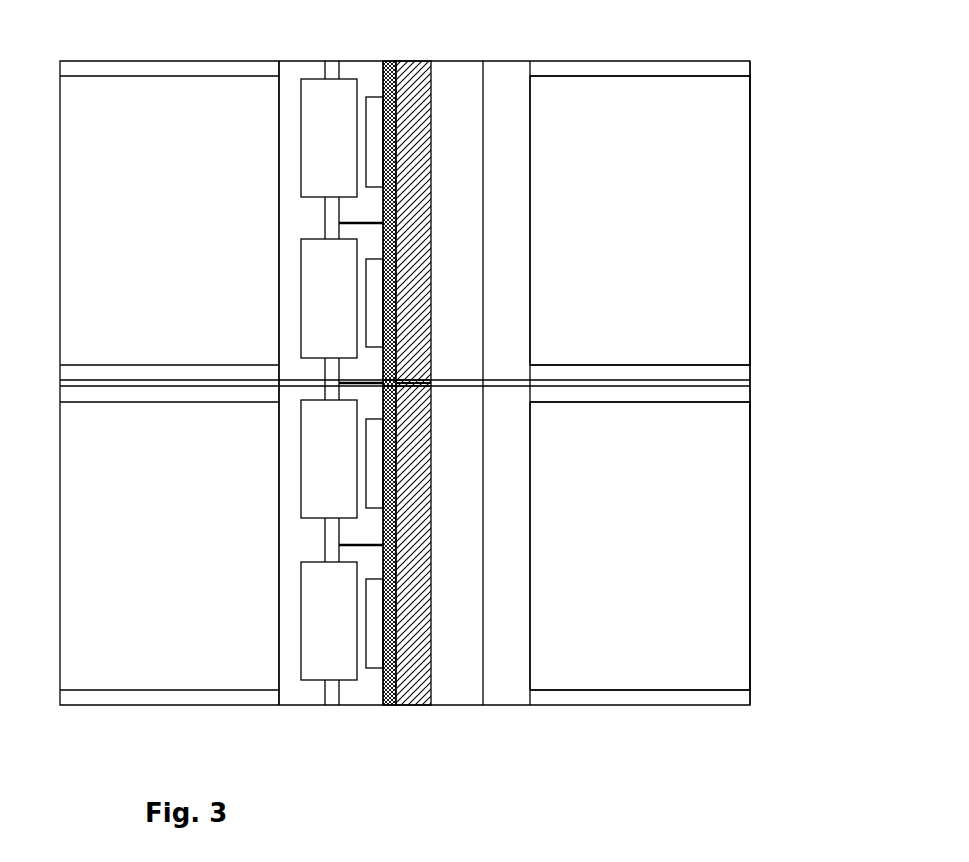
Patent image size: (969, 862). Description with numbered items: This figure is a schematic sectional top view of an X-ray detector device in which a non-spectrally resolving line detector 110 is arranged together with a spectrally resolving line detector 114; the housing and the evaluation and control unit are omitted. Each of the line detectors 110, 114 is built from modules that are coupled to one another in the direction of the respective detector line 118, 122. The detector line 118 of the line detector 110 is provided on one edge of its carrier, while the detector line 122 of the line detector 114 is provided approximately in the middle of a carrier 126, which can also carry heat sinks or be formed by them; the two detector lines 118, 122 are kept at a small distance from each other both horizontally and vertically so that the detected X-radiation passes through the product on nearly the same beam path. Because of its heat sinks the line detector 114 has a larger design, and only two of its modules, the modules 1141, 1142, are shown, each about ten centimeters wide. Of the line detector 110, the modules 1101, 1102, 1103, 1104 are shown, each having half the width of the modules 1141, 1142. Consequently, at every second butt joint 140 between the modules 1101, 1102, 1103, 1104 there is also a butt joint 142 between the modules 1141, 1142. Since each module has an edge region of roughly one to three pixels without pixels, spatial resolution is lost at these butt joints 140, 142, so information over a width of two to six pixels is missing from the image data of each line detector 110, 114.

The non-spectrally resolving line detector 110 is at (302, 56).
The module of the non-spectrally resolving line detector 1101 is at (302, 158).
The module of the non-spectrally resolving line detector 1102 is at (314, 266).
The module of the non-spectrally resolving line detector 1103 is at (308, 431).
The module of the non-spectrally resolving line detector 1104 is at (310, 578).
The spectrally resolving line detector 114 is at (753, 103).
The module of the spectrally resolving line detector 1141 is at (640, 220).
The module of the spectrally resolving line detector 1142 is at (640, 546).
The detector line 118 is at (388, 60).
The detector line 122 is at (421, 70).
The carrier 126 is at (748, 186).
The butt joint 140 is at (392, 382).
The butt joint 142 is at (425, 382).